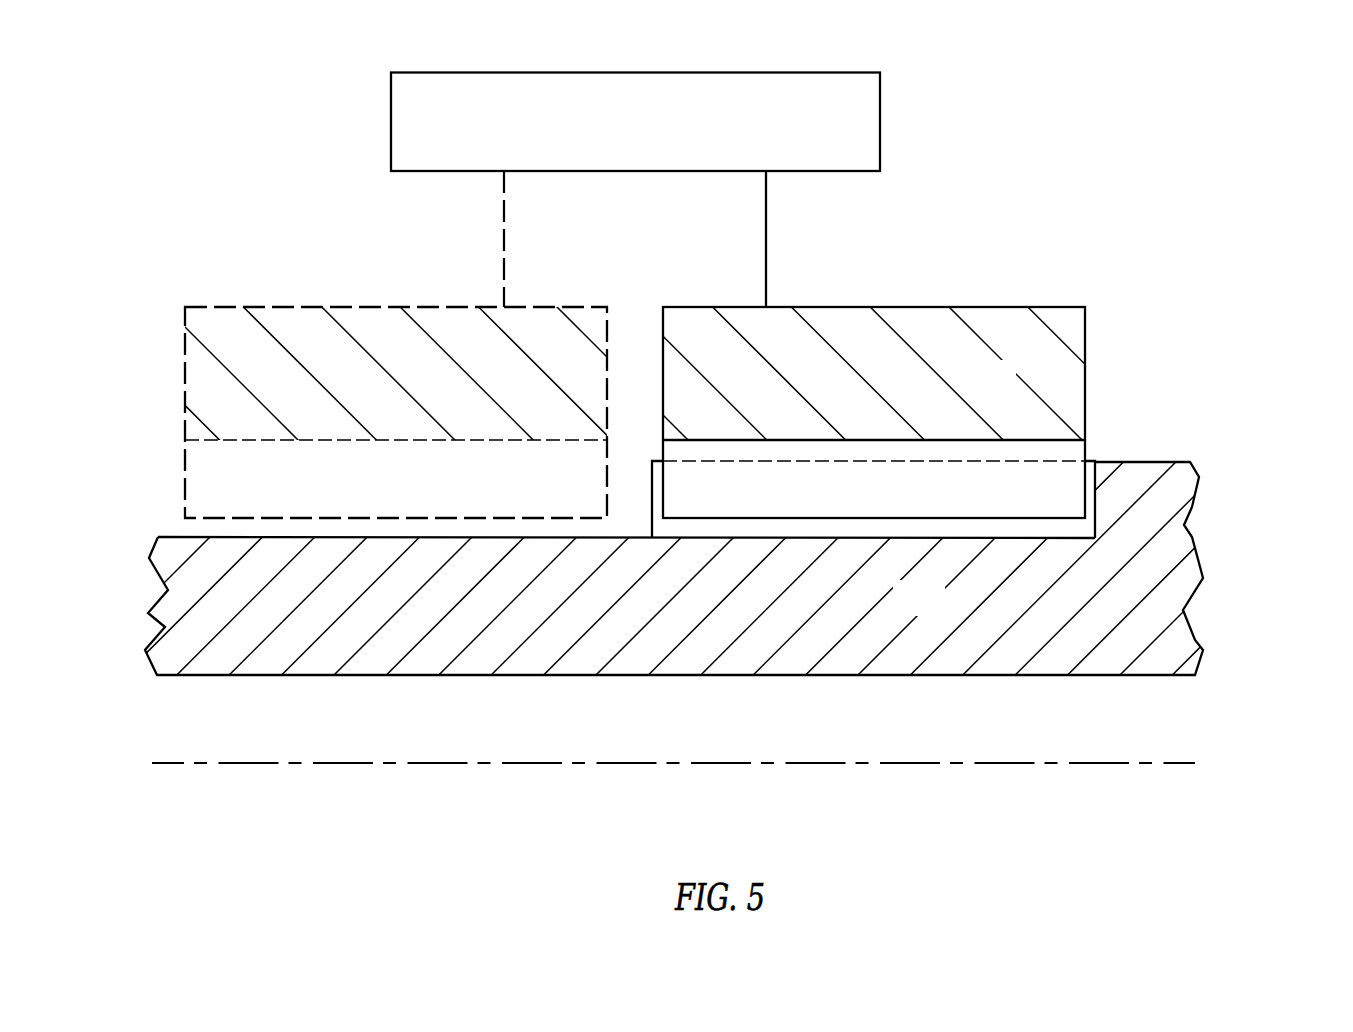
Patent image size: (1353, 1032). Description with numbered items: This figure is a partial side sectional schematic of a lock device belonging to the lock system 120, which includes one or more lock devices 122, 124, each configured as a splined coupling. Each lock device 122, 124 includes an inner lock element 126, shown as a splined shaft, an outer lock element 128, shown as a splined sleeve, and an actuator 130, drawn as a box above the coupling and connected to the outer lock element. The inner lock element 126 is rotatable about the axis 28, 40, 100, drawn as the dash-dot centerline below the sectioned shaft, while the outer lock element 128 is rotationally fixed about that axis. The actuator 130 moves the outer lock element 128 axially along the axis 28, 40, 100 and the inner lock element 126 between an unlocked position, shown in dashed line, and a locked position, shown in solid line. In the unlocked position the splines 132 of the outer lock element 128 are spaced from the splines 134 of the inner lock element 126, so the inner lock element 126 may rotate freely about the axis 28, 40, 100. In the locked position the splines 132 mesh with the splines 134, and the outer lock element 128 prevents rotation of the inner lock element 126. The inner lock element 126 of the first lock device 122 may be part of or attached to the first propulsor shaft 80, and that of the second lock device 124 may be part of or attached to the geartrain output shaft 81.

The lock system 120 is at (1104, 97).
The first lock device 122 is at (1171, 132).
The second lock device 124 is at (1100, 159).
The actuator 130 is at (884, 108).
The outer lock element 128 is at (172, 364).
The splines of the inner lock element 134 is at (972, 462).
The splines of the outer lock element 132 is at (932, 518).
The first propulsor shaft 80 is at (676, 570).
The geartrain output shaft 81 is at (676, 570).
The inner lock element 126 is at (1205, 521).
The axis 28 is at (688, 812).
The axis 40 is at (688, 812).
The axis 100 is at (1187, 764).